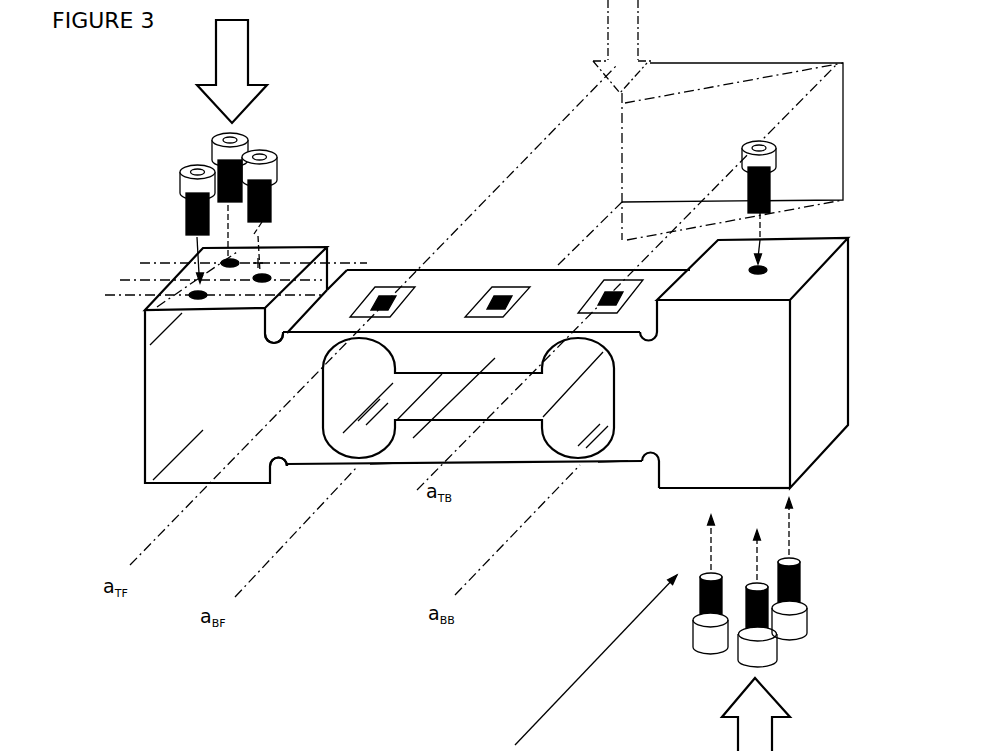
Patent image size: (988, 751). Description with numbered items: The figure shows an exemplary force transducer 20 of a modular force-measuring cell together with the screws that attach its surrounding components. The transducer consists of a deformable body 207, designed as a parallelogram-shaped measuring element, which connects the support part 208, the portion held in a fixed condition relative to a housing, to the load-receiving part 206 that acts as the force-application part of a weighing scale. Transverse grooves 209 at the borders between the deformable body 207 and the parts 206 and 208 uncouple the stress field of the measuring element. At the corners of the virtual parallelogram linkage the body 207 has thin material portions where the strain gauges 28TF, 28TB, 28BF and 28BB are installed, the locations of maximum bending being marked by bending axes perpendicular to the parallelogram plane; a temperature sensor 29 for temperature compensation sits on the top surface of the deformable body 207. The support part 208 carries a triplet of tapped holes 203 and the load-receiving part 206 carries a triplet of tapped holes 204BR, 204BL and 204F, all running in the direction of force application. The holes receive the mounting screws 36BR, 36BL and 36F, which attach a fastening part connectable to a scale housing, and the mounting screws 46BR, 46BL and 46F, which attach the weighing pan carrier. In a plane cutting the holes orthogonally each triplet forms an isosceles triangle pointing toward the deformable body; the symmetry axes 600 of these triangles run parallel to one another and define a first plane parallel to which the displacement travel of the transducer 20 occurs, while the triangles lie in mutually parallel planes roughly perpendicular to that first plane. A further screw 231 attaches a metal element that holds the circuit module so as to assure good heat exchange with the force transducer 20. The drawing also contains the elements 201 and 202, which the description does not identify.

The force transducer 20 is at (200, 353).
The bone-shaped through opening 201 is at (588, 380).
The load receiving plate 202 is at (778, 247).
The tapped holes 203 is at (793, 492).
The tapped hole 204BR is at (155, 215).
The tapped hole 204F is at (171, 237).
The tapped hole 204BL is at (188, 262).
The load-receiving part 206 is at (148, 485).
The deformable body 207 is at (428, 300).
The support part 208 is at (668, 489).
The transverse grooves 209 is at (270, 342).
The screw 231 is at (752, 140).
The strain gauge 28TF is at (378, 290).
The strain gauge 28TB is at (607, 287).
The strain gauge 28BF is at (385, 467).
The strain gauge 28BB is at (613, 470).
The temperature sensor 29 is at (489, 288).
The mounting screw 46BR is at (207, 140).
The mounting screw 46BL is at (183, 167).
The mounting screw 46F is at (275, 150).
The symmetry axes 600 is at (130, 287).
The mounting screw 36F is at (697, 645).
The mounting screw 36BL is at (777, 658).
The mounting screw 36BR is at (808, 628).